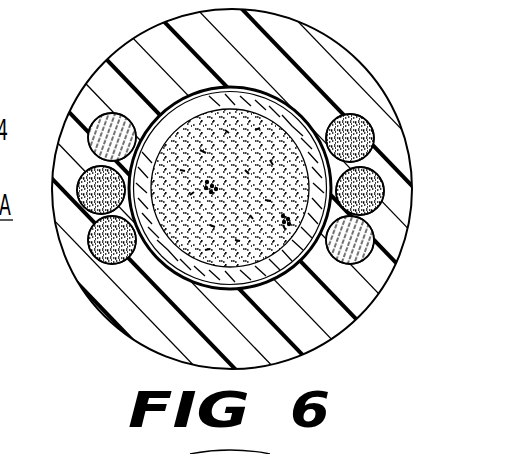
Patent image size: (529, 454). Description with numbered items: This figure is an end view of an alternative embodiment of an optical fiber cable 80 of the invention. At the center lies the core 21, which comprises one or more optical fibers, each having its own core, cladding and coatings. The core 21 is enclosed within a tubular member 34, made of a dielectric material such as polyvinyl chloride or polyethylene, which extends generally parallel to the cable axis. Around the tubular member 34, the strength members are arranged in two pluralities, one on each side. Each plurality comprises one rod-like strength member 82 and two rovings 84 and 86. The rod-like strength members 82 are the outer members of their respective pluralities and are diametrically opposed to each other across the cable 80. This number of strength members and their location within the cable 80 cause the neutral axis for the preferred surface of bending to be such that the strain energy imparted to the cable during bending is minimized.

The cable 80 is at (353, 55).
The tubular member 34 is at (196, 90).
The core 21 is at (208, 287).
The rod-like strength member 82 is at (98, 114).
The roving 84 is at (79, 180).
The roving 86 is at (369, 122).